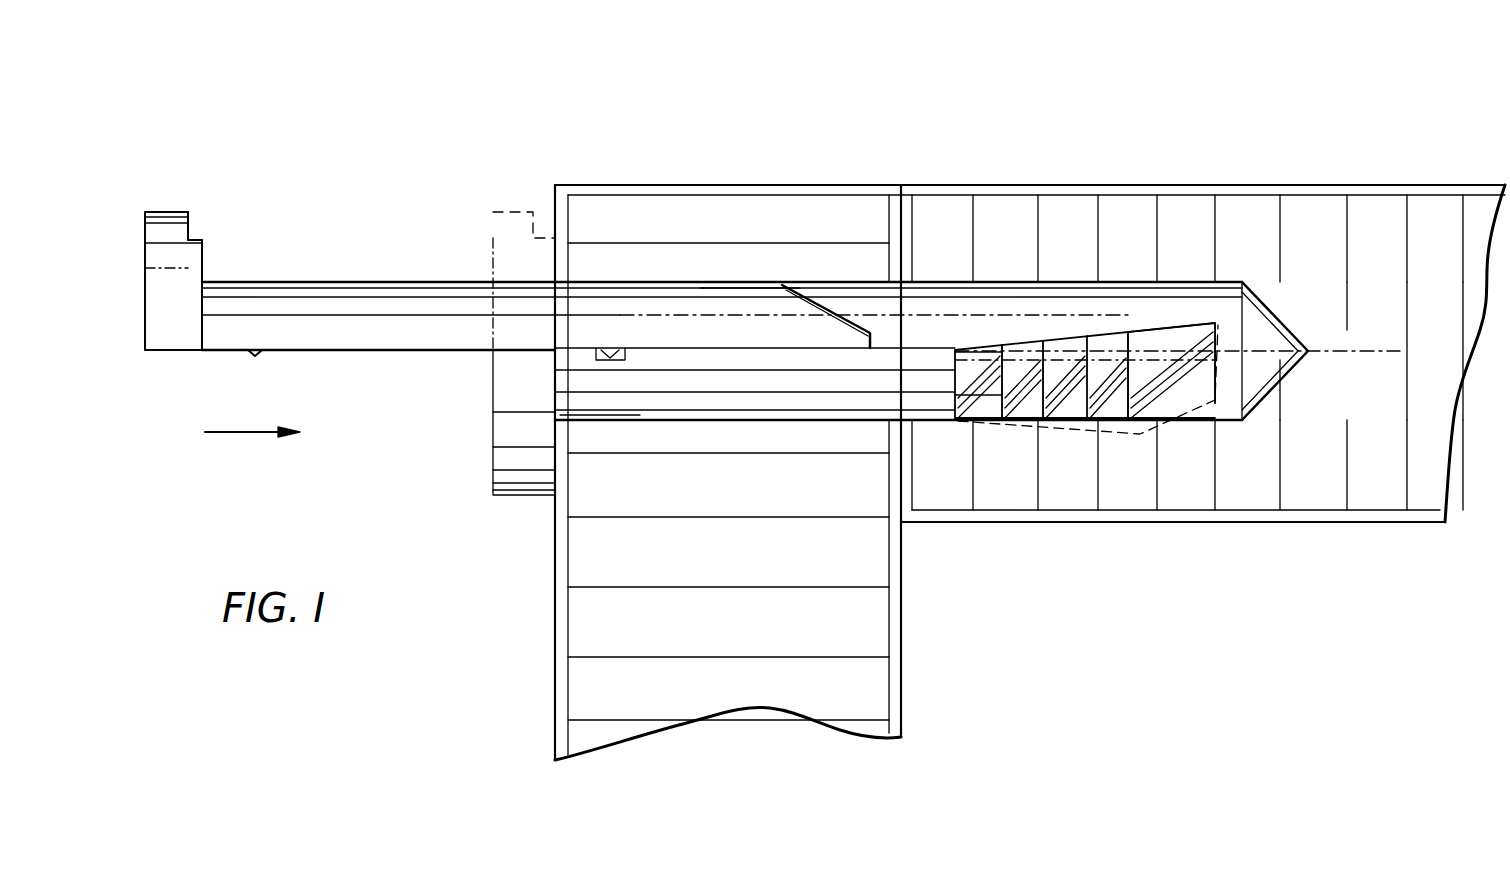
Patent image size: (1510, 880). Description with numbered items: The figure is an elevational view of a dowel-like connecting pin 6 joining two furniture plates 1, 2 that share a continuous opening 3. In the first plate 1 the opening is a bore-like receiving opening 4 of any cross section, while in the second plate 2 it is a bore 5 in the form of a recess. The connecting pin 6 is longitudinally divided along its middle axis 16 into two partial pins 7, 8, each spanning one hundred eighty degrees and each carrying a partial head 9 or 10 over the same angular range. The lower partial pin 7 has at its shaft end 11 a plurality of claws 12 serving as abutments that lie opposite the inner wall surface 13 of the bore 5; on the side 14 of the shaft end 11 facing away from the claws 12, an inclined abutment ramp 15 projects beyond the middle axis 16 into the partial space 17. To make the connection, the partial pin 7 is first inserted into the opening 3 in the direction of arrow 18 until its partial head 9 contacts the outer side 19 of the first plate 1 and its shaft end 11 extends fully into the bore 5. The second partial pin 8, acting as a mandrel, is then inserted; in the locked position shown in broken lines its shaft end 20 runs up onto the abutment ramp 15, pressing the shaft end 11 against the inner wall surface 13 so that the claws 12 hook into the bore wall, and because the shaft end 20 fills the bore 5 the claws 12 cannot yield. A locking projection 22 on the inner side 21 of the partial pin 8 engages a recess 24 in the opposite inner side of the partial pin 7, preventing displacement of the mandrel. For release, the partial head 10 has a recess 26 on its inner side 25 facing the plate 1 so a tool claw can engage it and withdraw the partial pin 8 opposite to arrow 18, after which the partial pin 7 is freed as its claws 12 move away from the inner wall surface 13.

The furniture plate 1 is at (602, 615).
The furniture plate 2 is at (1297, 483).
The continuous opening 3 is at (593, 412).
The receiving opening 4 is at (600, 287).
The bore 5 is at (1195, 284).
The connecting pin 6 is at (925, 405).
The partial pin 7 is at (765, 360).
The partial pin 8 is at (707, 285).
The partial head 9 is at (505, 428).
The partial head 10 is at (167, 333).
The shaft end 11 is at (940, 340).
The claws 12 is at (1010, 405).
The inner wall surface 13 is at (1193, 412).
The side of the shaft end 14 is at (950, 345).
The abutment ramp 15 is at (1140, 322).
The middle axis 16 is at (1368, 352).
The partial space 17 is at (1230, 312).
The arrow 18 is at (232, 436).
The outer side 19 is at (553, 708).
The shaft end 20 is at (832, 325).
The inner side 21 is at (362, 352).
The locking projection 22 is at (253, 355).
The recess 24 is at (608, 360).
The inner side 25 is at (205, 268).
The recess 26 is at (192, 225).